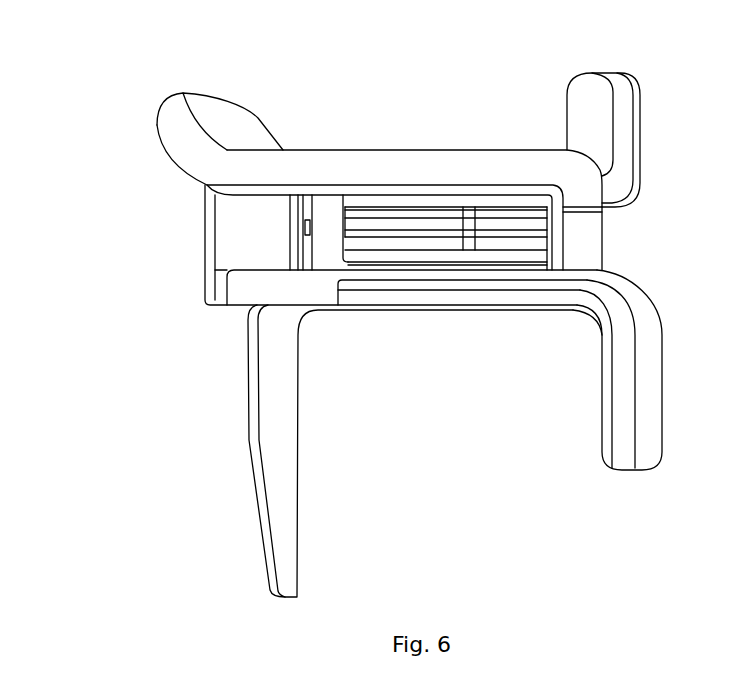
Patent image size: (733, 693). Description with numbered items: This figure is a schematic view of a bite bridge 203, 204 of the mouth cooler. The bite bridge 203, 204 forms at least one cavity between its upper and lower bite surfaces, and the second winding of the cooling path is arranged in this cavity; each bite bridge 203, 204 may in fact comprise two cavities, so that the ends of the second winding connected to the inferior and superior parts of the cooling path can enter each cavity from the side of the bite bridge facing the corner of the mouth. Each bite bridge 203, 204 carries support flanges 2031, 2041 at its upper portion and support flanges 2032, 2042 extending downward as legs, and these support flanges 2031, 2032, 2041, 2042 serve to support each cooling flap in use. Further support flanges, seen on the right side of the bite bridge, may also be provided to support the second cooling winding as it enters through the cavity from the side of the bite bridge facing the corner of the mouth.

The bite bridge 203 is at (336, 300).
The bite bridge 204 is at (336, 300).
The support flange 2031 is at (325, 171).
The support flange 2041 is at (205, 120).
The support flange 2032 is at (371, 433).
The support flange 2042 is at (277, 367).